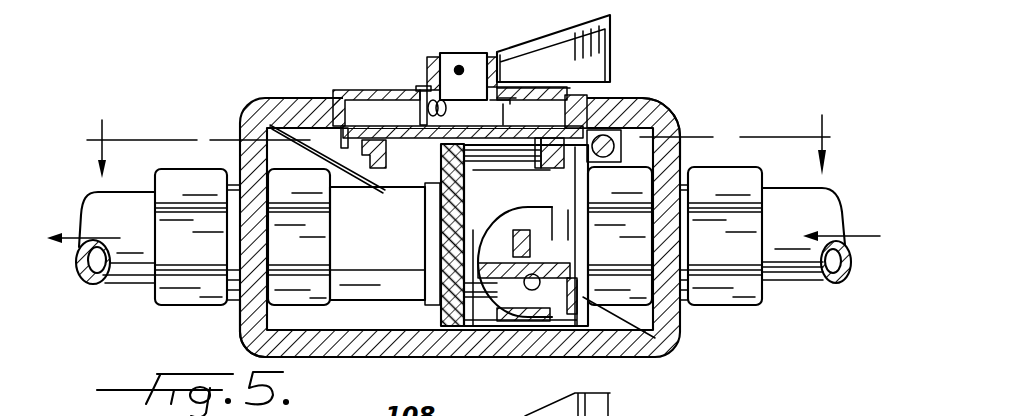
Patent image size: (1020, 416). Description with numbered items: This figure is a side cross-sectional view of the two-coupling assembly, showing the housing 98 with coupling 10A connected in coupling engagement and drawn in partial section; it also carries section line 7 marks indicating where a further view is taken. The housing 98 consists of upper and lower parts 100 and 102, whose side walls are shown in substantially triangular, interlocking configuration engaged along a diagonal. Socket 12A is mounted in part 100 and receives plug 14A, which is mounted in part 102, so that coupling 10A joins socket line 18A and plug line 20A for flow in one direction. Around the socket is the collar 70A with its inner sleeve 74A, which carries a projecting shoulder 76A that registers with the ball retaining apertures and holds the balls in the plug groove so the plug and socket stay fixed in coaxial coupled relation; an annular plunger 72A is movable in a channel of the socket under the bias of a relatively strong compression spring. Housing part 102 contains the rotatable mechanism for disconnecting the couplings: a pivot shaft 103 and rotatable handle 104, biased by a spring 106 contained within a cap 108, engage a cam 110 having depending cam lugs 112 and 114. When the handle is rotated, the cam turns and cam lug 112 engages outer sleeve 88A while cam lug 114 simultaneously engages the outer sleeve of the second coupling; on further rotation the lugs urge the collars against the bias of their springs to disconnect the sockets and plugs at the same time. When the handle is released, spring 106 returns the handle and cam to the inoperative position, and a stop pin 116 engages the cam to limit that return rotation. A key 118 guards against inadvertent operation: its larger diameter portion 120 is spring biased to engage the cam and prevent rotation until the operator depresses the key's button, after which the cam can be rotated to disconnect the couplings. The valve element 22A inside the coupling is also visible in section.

The housing 98 is at (282, 92).
The upper housing part 100 is at (242, 325).
The lower housing part 102 is at (682, 106).
The section line 7- 7 is at (459, 129).
The cap 108 is at (358, 90).
The spring 106 is at (422, 90).
The pivot shaft 103 is at (472, 55).
The rotatable handle 104 is at (612, 25).
The cam 110 is at (598, 96).
The larger diameter portion of key 120 is at (590, 128).
The key 118 is at (630, 149).
The socket 12A is at (288, 172).
The projecting shoulder 76A is at (576, 248).
The stop pin 116 is at (345, 150).
The cam lug 112 is at (392, 152).
The cam lug 114 is at (538, 170).
The outer sleeve 88A is at (455, 326).
The plug 14A is at (540, 283).
The plunger 22A is at (503, 265).
The collar 70A is at (486, 312).
The inner sleeve 74A is at (522, 321).
The annular plunger 72A is at (574, 314).
The coupling 10A is at (413, 305).
The socket line 18A is at (127, 287).
The plug line 20A is at (788, 285).